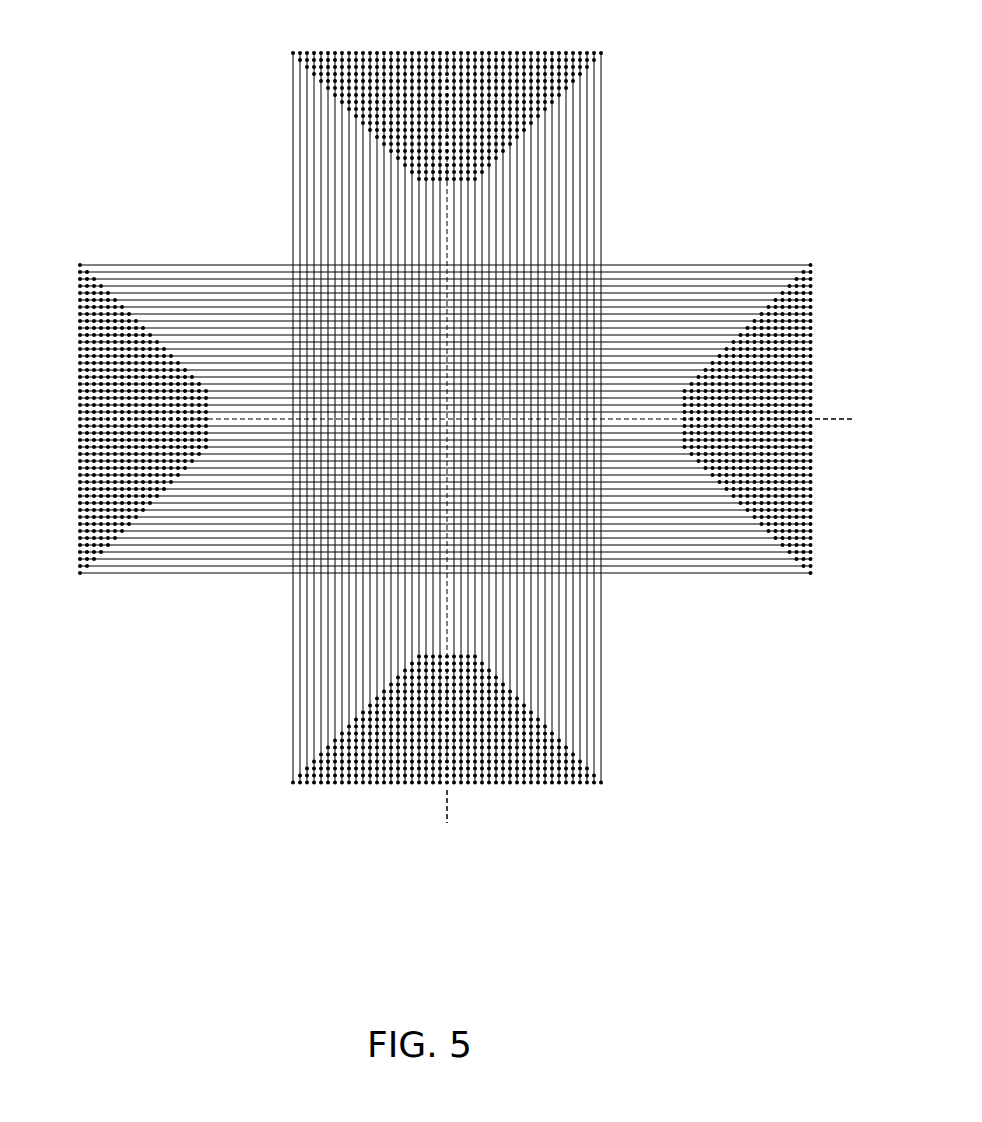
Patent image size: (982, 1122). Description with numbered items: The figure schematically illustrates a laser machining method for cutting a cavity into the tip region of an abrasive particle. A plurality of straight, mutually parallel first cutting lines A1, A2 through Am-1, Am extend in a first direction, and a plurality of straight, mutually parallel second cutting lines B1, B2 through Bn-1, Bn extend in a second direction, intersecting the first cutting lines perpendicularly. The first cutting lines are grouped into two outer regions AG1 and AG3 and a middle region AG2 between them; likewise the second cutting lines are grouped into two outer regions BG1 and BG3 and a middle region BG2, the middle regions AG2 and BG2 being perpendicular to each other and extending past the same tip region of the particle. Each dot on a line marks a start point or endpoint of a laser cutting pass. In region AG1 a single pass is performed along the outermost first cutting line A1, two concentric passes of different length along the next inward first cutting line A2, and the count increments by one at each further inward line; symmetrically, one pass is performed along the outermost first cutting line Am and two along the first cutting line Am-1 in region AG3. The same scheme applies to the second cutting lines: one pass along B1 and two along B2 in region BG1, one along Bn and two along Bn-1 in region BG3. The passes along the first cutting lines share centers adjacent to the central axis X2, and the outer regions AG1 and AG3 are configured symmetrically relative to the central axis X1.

The outer region AG1 is at (293, 51).
The middle region AG2 is at (425, 51).
The outer region AG3 is at (600, 51).
The first cutting line A1 is at (293, 138).
The first cutting line A2 is at (300, 188).
The first cutting line Am-1 is at (594, 139).
The first cutting line Am is at (601, 189).
The outer region BG1 is at (75, 265).
The middle region BG2 is at (75, 397).
The outer region BG3 is at (75, 447).
The second cutting line B1 is at (768, 265).
The second cutting line B2 is at (697, 272).
The second cutting line Bn-1 is at (705, 567).
The second cutting line Bn is at (647, 573).
The central axis X1 is at (444, 808).
The central axis X2 is at (840, 415).